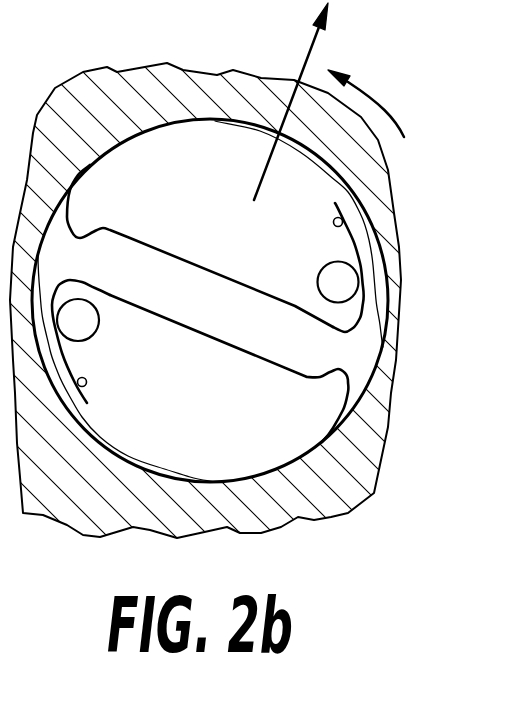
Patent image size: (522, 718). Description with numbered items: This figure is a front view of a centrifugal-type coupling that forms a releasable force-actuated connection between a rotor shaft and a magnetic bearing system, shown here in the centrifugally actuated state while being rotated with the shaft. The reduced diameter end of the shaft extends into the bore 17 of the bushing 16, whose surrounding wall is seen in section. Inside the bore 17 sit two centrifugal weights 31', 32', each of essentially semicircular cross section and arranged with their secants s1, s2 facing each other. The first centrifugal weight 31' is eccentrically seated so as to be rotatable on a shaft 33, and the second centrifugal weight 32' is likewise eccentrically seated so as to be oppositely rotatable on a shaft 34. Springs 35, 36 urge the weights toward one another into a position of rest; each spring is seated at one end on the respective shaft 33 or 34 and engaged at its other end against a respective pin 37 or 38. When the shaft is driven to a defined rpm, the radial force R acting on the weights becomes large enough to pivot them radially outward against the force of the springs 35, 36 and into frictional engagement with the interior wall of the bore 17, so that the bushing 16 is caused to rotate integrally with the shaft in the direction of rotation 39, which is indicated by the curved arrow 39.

The bushing 16 is at (228, 508).
The bore 17 is at (92, 438).
The centrifugal weight 31' is at (299, 185).
The centrifugal weight 32' is at (126, 413).
The shaft 33 is at (326, 280).
The shaft 34 is at (90, 327).
The spring 35 is at (352, 241).
The spring 36 is at (88, 378).
The pin 37 is at (334, 219).
The pin 38 is at (92, 392).
The direction of rotation 39 is at (368, 97).
The radial force R is at (313, 51).
The secant s1 is at (213, 274).
The secant s2 is at (190, 325).